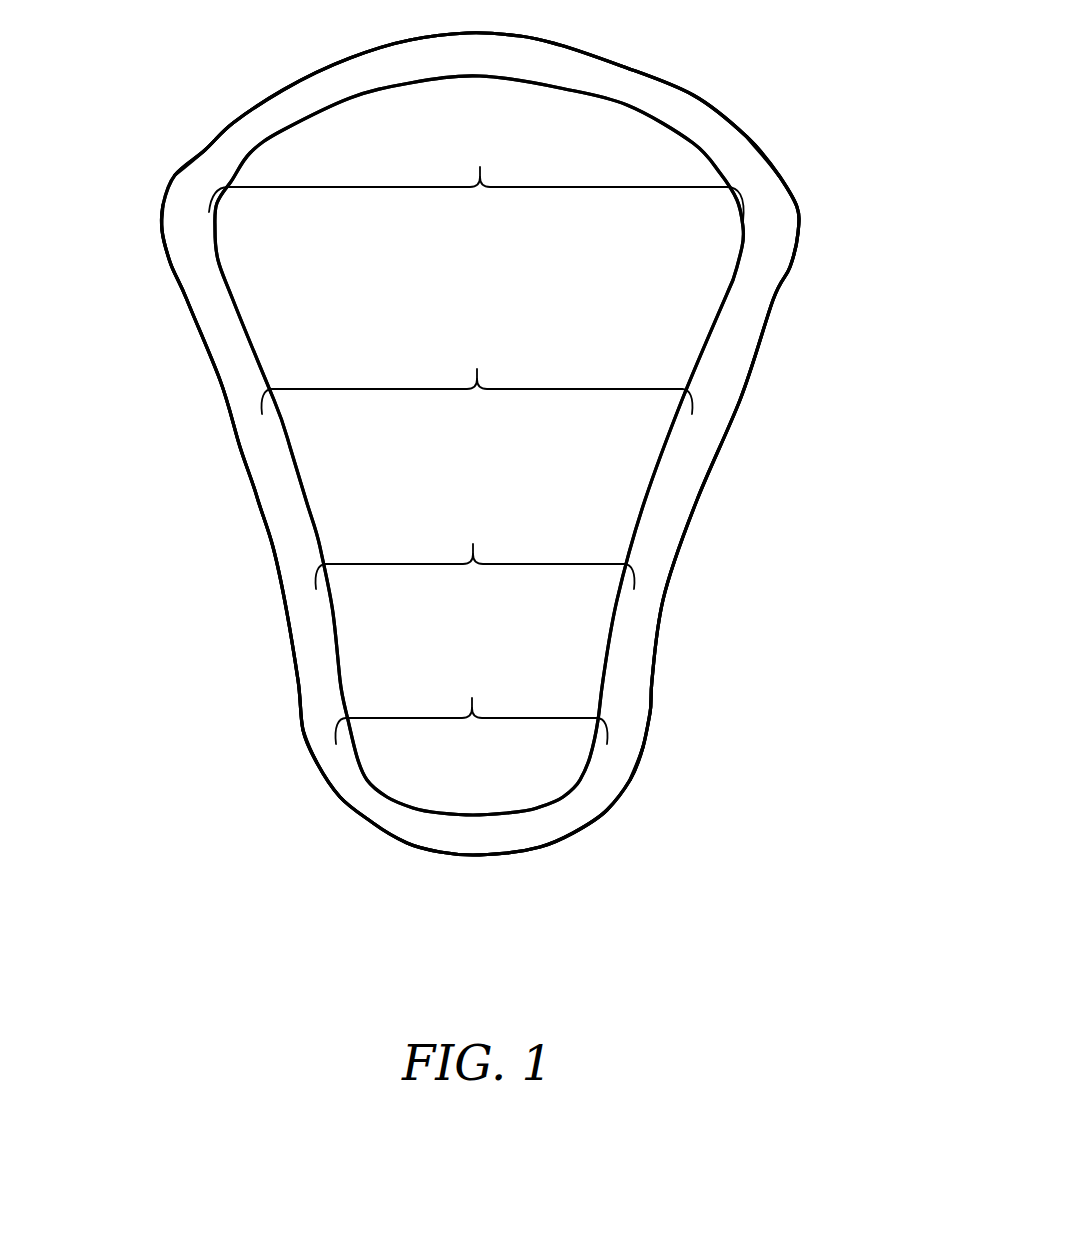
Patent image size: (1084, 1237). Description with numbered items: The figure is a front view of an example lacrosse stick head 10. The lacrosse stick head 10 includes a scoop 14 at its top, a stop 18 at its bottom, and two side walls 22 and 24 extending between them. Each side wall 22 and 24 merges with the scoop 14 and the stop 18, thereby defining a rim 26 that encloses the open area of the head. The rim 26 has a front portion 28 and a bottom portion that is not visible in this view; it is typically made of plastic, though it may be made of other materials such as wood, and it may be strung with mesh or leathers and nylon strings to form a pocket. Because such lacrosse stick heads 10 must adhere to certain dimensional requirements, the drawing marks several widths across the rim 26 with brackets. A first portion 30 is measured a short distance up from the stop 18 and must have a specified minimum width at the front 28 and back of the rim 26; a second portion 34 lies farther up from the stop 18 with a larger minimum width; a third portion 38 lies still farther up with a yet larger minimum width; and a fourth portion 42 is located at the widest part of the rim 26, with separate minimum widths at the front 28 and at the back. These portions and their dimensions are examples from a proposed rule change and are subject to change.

The lacrosse stick head 10 is at (754, 877).
The scoop 14 is at (578, 70).
The stop 18 is at (465, 832).
The side wall 22 is at (732, 372).
The side wall 24 is at (240, 395).
The rim 26 is at (763, 240).
The front portion 28 is at (626, 652).
The first portion 30 is at (471, 704).
The second portion 34 is at (474, 549).
The third portion 38 is at (476, 374).
The fourth portion 42 is at (476, 178).